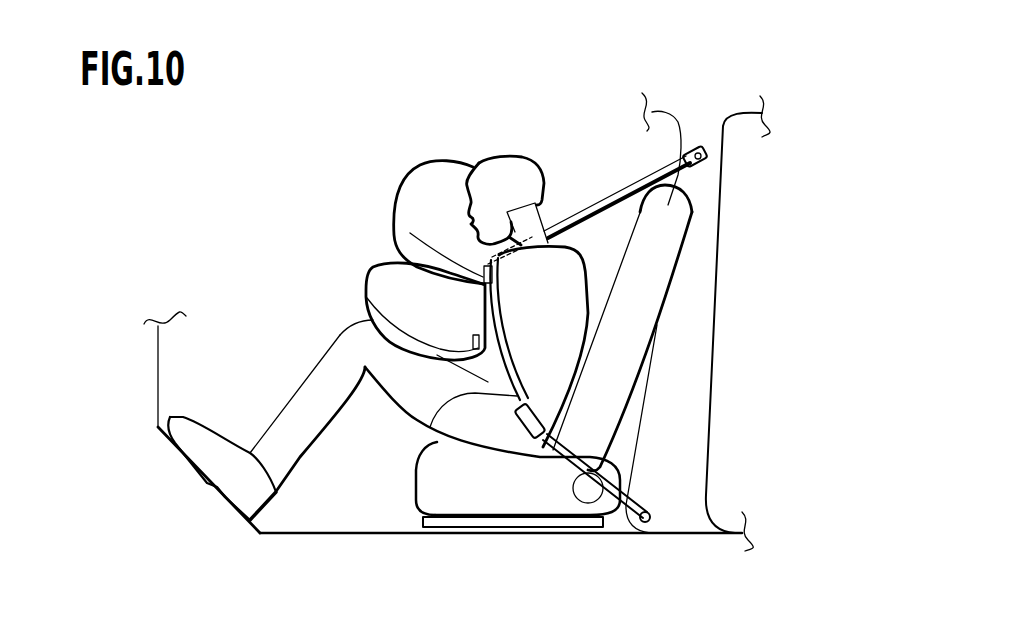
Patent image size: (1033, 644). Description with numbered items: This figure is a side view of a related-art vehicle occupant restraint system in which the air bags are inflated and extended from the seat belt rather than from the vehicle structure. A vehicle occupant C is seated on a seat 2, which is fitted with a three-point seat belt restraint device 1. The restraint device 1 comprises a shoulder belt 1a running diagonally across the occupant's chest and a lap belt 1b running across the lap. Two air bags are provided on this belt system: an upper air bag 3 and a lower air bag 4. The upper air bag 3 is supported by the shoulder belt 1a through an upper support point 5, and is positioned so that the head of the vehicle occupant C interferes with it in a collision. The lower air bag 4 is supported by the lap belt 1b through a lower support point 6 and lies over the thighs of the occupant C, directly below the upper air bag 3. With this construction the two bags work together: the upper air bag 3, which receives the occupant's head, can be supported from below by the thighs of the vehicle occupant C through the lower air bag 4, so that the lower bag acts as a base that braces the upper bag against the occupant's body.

The three-point seat belt restraint device 1 is at (620, 181).
The shoulder belt 1a is at (592, 211).
The lap belt 1b is at (430, 428).
The seat 2 is at (603, 395).
The upper air bag 3 is at (419, 217).
The lower air bag 4 is at (390, 285).
The upper support point 5 is at (410, 233).
The lower support point 6 is at (367, 298).
The vehicle occupant C is at (522, 152).